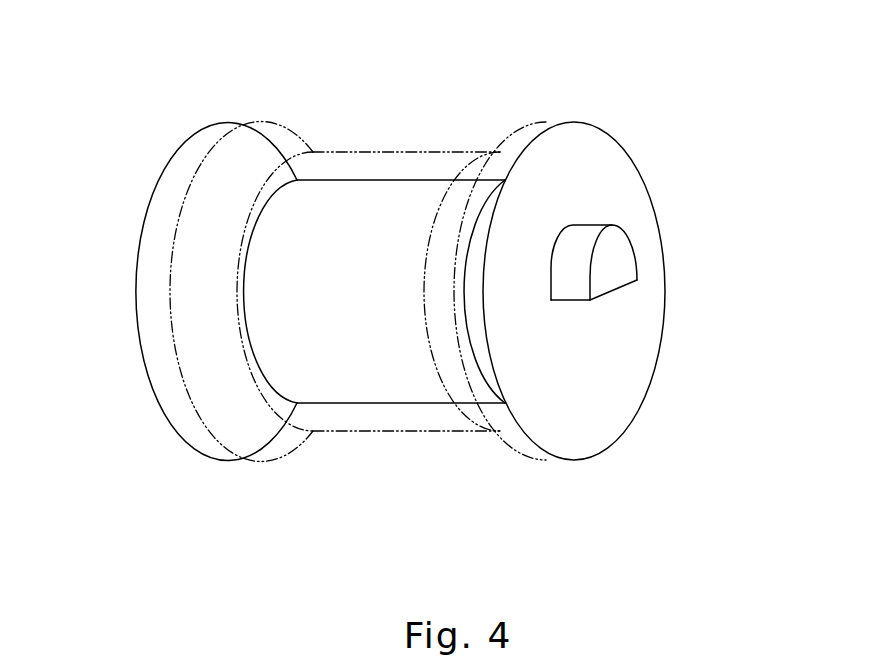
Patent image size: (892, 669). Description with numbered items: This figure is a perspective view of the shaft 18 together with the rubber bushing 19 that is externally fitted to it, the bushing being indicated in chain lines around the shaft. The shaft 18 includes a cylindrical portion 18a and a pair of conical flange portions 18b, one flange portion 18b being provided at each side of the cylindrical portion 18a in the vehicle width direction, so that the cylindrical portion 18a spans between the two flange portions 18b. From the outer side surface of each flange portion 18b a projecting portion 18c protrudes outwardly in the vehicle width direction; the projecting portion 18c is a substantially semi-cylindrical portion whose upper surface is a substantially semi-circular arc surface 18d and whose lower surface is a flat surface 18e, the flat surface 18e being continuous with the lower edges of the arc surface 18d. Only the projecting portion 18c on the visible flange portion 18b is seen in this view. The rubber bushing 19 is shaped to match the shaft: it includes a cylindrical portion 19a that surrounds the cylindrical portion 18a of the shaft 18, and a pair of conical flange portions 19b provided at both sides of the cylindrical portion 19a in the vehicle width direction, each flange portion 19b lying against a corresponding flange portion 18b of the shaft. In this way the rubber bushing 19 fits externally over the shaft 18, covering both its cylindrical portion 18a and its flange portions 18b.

The shaft 18 is at (200, 128).
The cylindrical portion 18a is at (358, 395).
The conical flange portion 18b is at (167, 415).
The projecting portion 18c is at (633, 252).
The arc surface 18d is at (583, 240).
The flat surface 18e is at (613, 293).
The rubber bushing 19 is at (443, 441).
The cylindrical portion 19a is at (392, 150).
The conical flange portion 19b is at (285, 127).